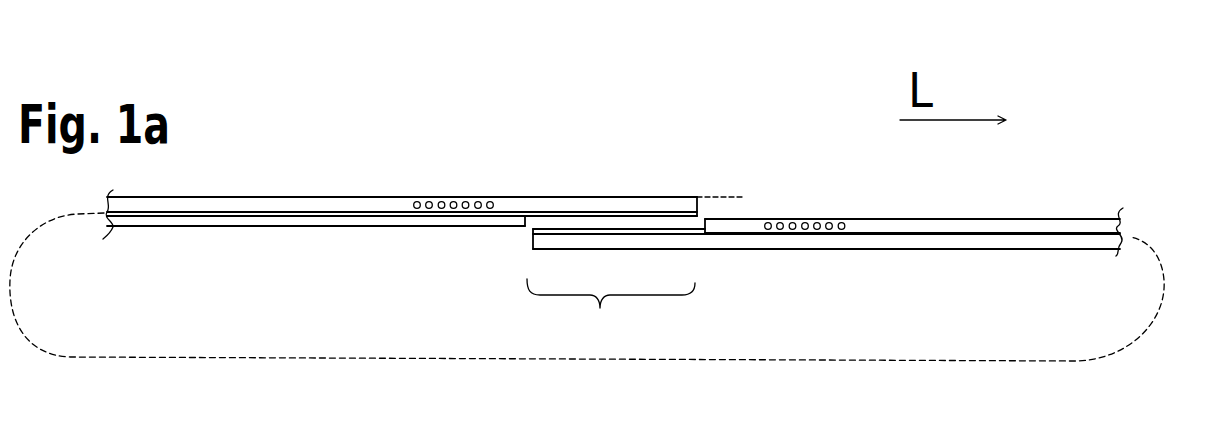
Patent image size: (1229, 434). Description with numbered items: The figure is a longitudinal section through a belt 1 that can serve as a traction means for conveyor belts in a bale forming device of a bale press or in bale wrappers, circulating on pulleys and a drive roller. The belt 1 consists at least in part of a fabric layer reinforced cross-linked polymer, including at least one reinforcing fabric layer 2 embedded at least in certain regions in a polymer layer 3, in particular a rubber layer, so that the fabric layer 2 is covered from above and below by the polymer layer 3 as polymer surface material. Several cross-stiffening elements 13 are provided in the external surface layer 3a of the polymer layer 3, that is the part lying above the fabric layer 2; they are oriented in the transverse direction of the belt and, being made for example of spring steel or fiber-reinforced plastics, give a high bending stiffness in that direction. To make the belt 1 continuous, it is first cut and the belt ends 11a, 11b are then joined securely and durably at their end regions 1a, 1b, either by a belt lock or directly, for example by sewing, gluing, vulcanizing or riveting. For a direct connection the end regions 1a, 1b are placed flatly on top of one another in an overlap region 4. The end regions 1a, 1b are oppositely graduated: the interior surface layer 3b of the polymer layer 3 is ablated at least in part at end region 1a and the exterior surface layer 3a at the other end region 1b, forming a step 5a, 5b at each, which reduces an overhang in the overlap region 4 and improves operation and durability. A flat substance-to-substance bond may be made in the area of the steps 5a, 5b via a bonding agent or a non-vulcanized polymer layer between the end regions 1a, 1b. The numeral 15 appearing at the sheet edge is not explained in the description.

The belt 1 is at (1101, 178).
The end region 1a is at (693, 188).
The end region 1b is at (547, 252).
The reinforcing fabric layer 2 is at (188, 213).
The polymer layer 3 is at (267, 230).
The external surface layer 3a is at (302, 203).
The interior surface layer 3b is at (398, 220).
The overlap region 4 is at (611, 321).
The step 5a is at (521, 214).
The step 5b is at (712, 239).
The belt end 11a is at (703, 218).
The belt end 11b is at (524, 236).
The cross-stiffening elements 13 is at (450, 185).
The roll / enclosure 15 is at (251, 426).